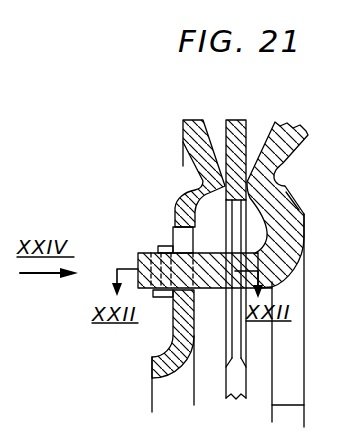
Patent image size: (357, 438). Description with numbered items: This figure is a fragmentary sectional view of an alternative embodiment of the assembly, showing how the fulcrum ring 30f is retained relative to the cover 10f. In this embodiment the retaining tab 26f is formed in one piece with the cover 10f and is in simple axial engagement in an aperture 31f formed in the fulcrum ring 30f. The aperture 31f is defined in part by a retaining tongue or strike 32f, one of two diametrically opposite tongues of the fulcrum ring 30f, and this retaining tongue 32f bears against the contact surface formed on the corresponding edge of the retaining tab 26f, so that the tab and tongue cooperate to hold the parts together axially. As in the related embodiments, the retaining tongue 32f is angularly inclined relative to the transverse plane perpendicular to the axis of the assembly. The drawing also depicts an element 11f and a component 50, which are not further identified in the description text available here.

The cover 10f is at (307, 117).
The shaft 11f is at (236, 116).
The retaining tab 26f is at (212, 263).
The fulcrum ring 30f is at (177, 121).
The aperture 31f is at (195, 300).
The retaining tongue 32f is at (171, 297).
The ring 50 is at (163, 250).